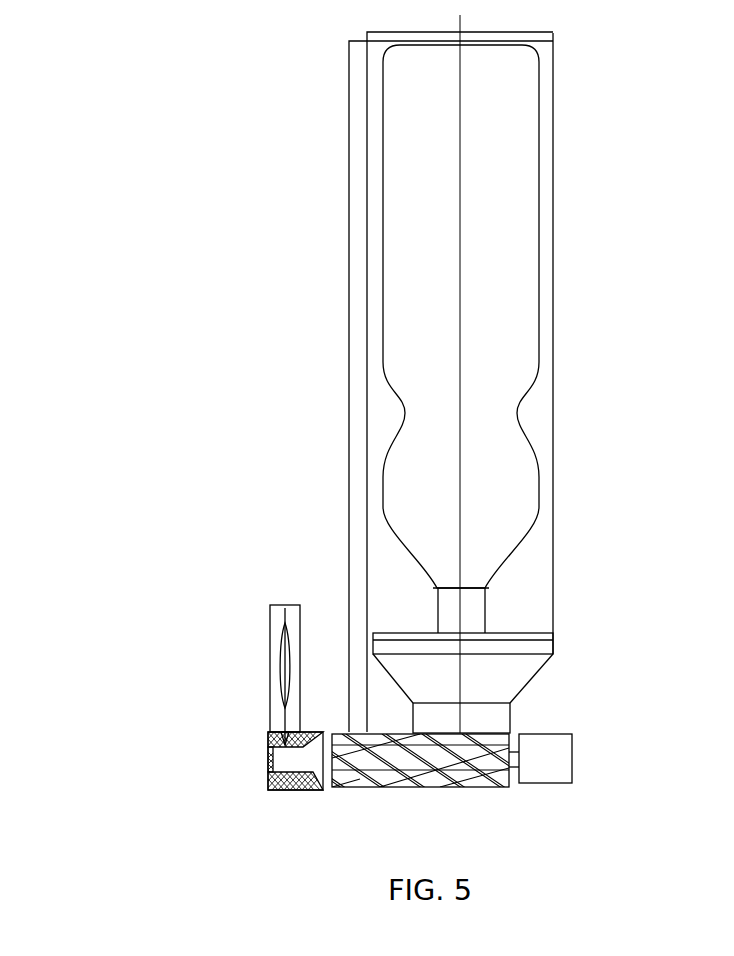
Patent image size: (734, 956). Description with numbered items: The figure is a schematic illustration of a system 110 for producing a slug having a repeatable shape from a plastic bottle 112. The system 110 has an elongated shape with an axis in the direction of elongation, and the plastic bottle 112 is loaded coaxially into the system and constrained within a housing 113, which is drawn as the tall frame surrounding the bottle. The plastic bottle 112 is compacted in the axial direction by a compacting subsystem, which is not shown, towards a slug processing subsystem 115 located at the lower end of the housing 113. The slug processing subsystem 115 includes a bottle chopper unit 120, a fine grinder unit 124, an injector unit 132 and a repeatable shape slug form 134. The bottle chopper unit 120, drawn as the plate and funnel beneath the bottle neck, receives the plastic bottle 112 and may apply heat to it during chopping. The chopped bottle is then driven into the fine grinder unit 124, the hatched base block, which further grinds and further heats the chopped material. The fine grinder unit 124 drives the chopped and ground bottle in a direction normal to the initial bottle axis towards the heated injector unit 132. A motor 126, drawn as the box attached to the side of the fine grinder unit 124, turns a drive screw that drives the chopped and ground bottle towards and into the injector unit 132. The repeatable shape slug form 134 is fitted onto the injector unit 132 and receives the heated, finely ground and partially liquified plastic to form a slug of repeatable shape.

The system 110 is at (96, 102).
The plastic bottle 112 is at (535, 130).
The housing 113 is at (555, 283).
The slug processing subsystem 115 is at (244, 507).
The bottle chopper unit 120 is at (557, 648).
The fine grinder unit 124 is at (333, 788).
The motor 126 is at (572, 752).
The injector unit 132 is at (268, 758).
The repeatable shape slug form 134 is at (270, 623).